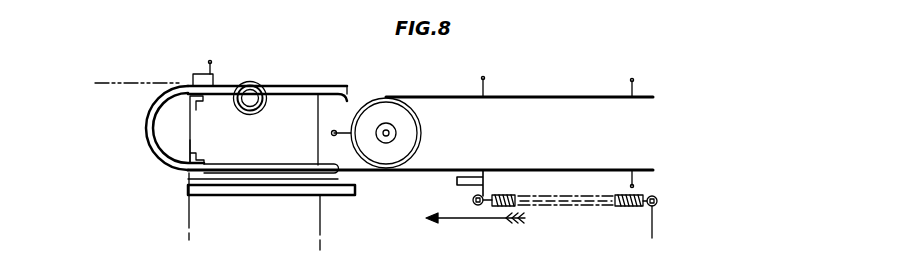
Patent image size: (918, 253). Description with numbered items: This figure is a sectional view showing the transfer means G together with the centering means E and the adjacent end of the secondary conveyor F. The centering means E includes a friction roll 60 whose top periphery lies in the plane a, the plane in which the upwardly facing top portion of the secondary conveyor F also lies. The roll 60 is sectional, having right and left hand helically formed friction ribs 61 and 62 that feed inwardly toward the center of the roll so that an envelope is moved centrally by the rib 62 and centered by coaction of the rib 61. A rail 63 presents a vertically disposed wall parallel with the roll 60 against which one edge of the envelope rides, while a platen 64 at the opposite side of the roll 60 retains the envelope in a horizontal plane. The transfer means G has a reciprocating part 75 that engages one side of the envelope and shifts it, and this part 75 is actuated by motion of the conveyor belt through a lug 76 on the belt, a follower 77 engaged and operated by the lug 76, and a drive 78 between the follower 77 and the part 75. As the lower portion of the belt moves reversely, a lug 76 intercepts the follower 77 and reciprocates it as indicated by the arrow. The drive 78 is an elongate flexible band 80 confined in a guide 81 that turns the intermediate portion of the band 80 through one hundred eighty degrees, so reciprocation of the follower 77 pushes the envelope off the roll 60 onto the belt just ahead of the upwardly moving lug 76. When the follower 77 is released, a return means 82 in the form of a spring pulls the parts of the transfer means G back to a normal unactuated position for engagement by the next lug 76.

The plane a is at (125, 82).
The friction roll 60 is at (261, 111).
The right hand helically formed friction rib 61 is at (243, 112).
The left hand helically formed friction rib 62 is at (200, 149).
The rail 63 is at (215, 78).
The platen 64 is at (350, 100).
The reciprocating part 75 is at (201, 73).
The lug 76 is at (490, 84).
The follower 77 is at (478, 186).
The drive 78 is at (386, 174).
The band 80 is at (161, 173).
The guide 81 is at (145, 150).
The return means 82 is at (580, 207).
The centering means E is at (262, 80).
The secondary conveyor F is at (572, 95).
The transfer means G is at (129, 123).